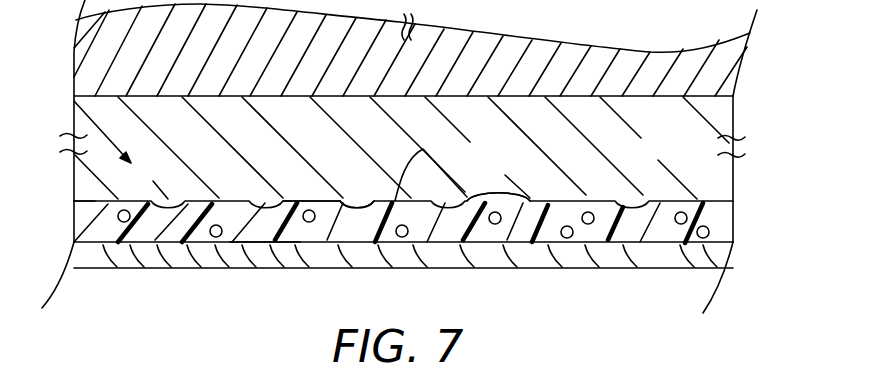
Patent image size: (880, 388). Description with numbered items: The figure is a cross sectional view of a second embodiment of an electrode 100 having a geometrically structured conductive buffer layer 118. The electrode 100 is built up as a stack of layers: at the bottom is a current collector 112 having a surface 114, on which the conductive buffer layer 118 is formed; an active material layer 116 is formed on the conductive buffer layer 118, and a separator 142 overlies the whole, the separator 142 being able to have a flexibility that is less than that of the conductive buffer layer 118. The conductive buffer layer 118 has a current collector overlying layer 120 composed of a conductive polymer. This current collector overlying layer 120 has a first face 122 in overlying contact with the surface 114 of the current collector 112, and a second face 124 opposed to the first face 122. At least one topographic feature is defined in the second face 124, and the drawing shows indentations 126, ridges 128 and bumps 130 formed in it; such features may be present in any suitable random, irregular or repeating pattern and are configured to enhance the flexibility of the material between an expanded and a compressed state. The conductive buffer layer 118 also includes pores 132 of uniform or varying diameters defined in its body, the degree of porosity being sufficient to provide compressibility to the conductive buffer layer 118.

The electrode 100 is at (746, 74).
The current collector 112 is at (80, 253).
The surface 114 is at (145, 203).
The active material layer 116 is at (682, 149).
The conductive buffer layer 118 is at (714, 223).
The current collector overlying layer 120 is at (668, 230).
The first face 122 is at (263, 245).
The second face 124 is at (58, 189).
The indentations 126 is at (358, 201).
The ridges 128 is at (312, 196).
The bumps 130 is at (497, 189).
The pores 132 is at (591, 224).
The separator 142 is at (640, 58).